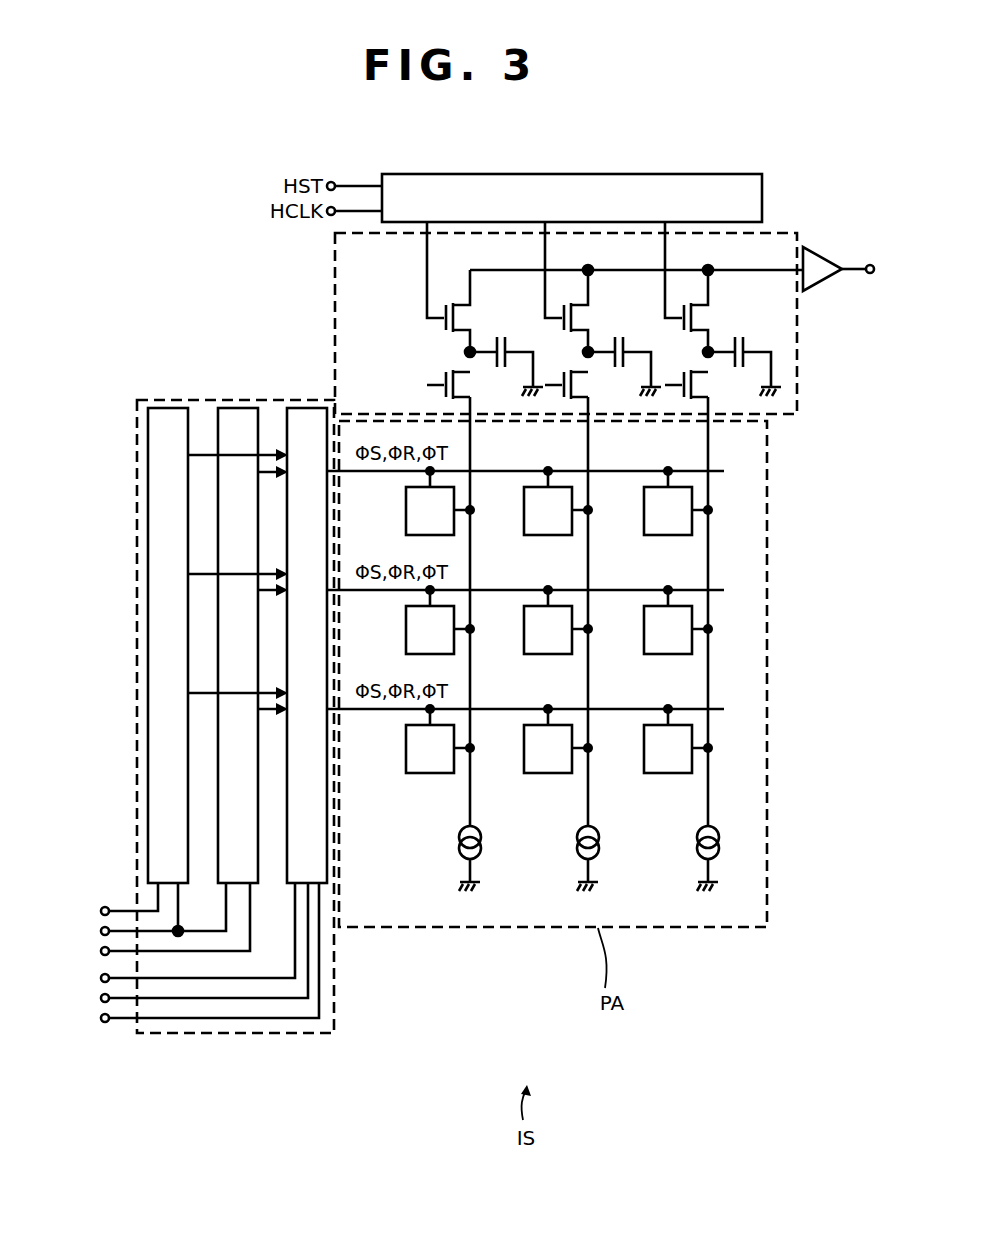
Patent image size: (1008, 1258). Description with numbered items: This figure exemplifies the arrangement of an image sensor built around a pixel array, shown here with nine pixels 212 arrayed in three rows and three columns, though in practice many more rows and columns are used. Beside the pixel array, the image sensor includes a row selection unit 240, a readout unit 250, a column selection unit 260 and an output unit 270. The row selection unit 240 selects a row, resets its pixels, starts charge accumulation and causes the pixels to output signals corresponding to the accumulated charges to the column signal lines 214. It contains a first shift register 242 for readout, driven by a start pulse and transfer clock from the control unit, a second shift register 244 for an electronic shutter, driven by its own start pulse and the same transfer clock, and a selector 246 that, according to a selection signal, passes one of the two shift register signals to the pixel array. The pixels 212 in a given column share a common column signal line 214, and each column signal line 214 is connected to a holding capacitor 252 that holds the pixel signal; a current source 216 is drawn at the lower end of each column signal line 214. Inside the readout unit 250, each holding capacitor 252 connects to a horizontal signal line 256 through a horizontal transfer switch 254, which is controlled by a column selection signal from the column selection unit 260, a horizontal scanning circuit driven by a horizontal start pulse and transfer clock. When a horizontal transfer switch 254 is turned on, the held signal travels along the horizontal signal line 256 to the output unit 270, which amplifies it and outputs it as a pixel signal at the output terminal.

The column selection unit 260 is at (585, 173).
The output unit 270 is at (822, 248).
The horizontal signal line 256 is at (512, 268).
The horizontal transfer switch 254 is at (437, 329).
The holding capacitor 252 is at (500, 335).
The readout unit 250 is at (787, 415).
The pixel 212 is at (422, 774).
The column signal line 214 is at (471, 797).
The current source 216 is at (482, 852).
The row selection unit 240 is at (189, 723).
The first shift register 242 is at (168, 407).
The second shift register 244 is at (237, 407).
The selector 246 is at (306, 407).